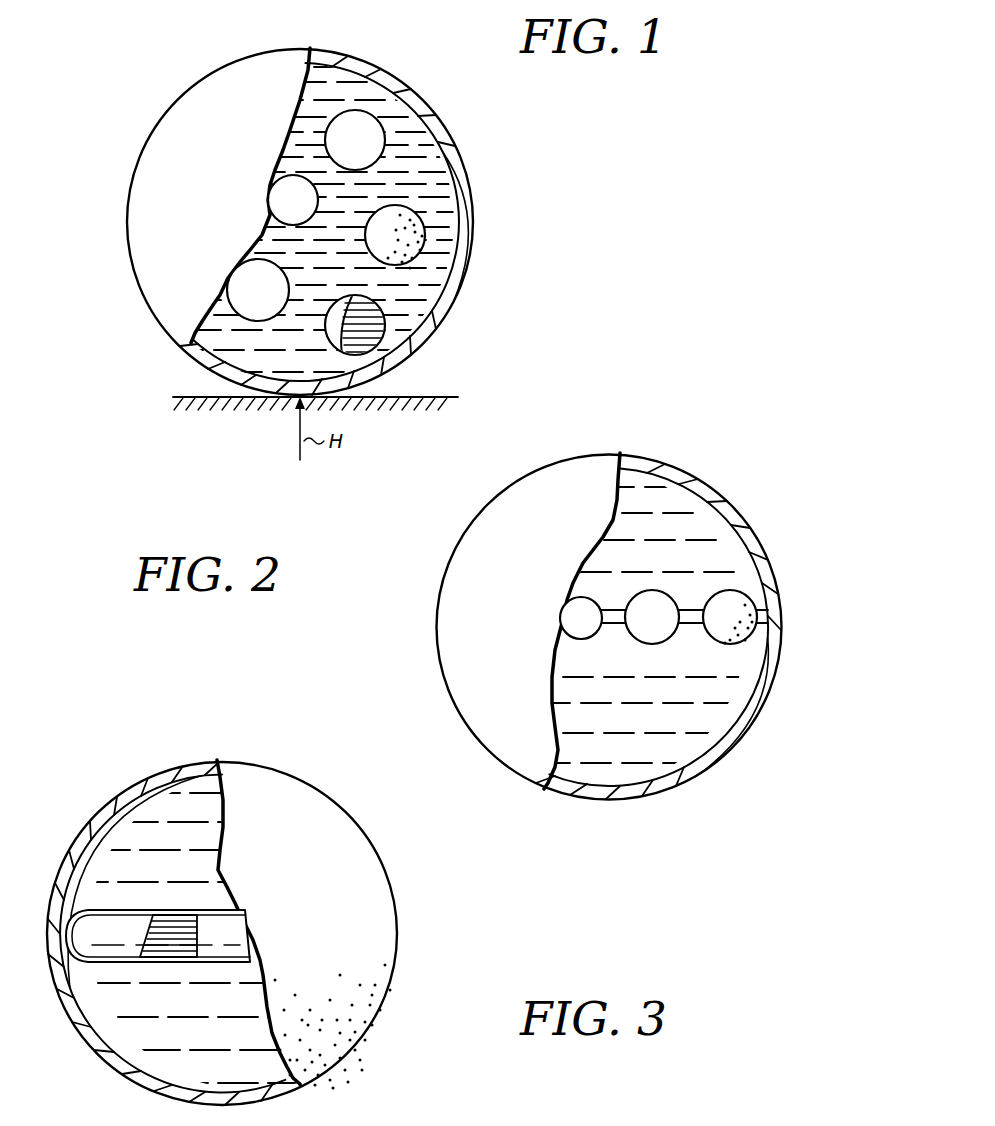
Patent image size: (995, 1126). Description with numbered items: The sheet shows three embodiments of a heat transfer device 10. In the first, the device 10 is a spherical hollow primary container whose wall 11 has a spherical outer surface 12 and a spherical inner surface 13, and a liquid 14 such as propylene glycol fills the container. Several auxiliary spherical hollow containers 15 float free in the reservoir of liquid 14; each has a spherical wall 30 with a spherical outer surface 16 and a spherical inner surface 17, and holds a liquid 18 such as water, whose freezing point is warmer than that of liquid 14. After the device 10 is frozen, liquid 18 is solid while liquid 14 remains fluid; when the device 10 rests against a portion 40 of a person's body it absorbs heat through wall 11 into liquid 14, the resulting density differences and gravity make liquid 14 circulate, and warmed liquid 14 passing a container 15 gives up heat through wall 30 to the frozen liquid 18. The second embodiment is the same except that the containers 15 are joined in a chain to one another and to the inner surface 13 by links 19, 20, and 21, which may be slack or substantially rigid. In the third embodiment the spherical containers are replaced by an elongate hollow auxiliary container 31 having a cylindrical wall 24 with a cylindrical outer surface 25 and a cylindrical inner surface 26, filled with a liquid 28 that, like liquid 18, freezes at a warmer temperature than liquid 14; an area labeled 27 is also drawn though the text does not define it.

In FIG. 1, the heat transfer device 10 is at (114, 162).
In FIG. 2, the heat transfer device 10 is at (585, 438).
In FIG. 3, the heat transfer device 10 is at (270, 752).
In FIG. 1, the wall 11 is at (153, 251).
In FIG. 2, the wall 11 is at (510, 543).
In FIG. 3, the wall 11 is at (347, 847).
In FIG. 1, the spherical outer surface 12 is at (222, 82).
In FIG. 2, the spherical outer surface 12 is at (445, 672).
In FIG. 3, the spherical outer surface 12 is at (175, 938).
In FIG. 1, the spherical inner surface 13 is at (440, 140).
In FIG. 2, the spherical inner surface 13 is at (738, 522).
In FIG. 3, the spherical inner surface 13 is at (131, 814).
In FIG. 1, the liquid 14 is at (446, 168).
In FIG. 2, the liquid 14 is at (730, 710).
In FIG. 3, the liquid 14 is at (172, 934).
In FIG. 1, the auxiliary spherical hollow container 15 is at (290, 169).
In FIG. 2, the auxiliary spherical hollow container 15 is at (742, 596).
In FIG. 1, the spherical outer surface 16 is at (290, 194).
In FIG. 2, the spherical outer surface 16 is at (588, 598).
In FIG. 1, the spherical inner surface 17 is at (366, 300).
In FIG. 1, the liquid 18 is at (380, 326).
In FIG. 2, the link 19 is at (607, 628).
In FIG. 2, the link 20 is at (683, 628).
In FIG. 2, the link 21 is at (752, 632).
In FIG. 3, the cylindrical wall 24 is at (234, 931).
In FIG. 3, the cylindrical outer surface 25 is at (215, 925).
In FIG. 3, the cylindrical inner surface 26 is at (185, 922).
In FIG. 3, the plug end 27 is at (76, 910).
In FIG. 3, the liquid 28 is at (150, 930).
In FIG. 1, the spherical wall 30 is at (238, 294).
In FIG. 3, the elongate hollow auxiliary container 31 is at (250, 946).
In FIG. 1, the portion of an individual's body 40 is at (441, 396).